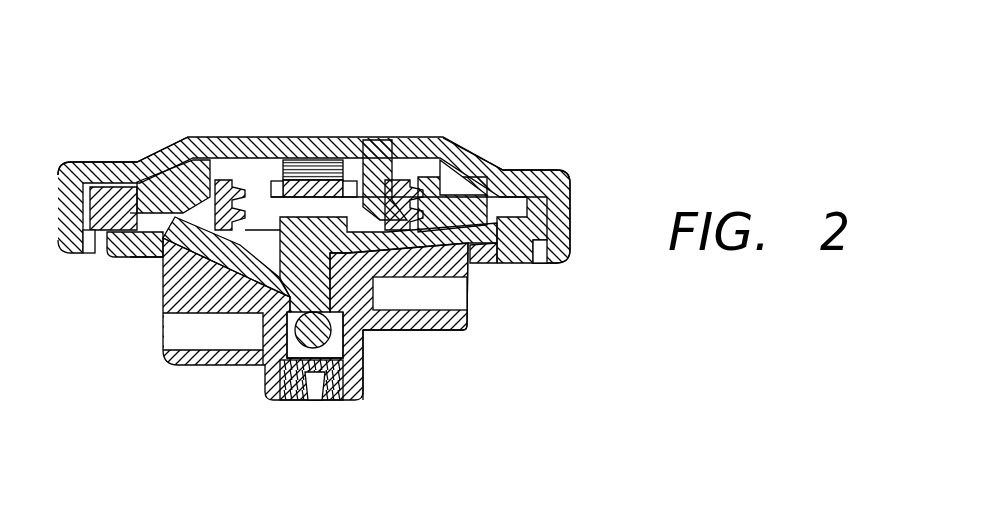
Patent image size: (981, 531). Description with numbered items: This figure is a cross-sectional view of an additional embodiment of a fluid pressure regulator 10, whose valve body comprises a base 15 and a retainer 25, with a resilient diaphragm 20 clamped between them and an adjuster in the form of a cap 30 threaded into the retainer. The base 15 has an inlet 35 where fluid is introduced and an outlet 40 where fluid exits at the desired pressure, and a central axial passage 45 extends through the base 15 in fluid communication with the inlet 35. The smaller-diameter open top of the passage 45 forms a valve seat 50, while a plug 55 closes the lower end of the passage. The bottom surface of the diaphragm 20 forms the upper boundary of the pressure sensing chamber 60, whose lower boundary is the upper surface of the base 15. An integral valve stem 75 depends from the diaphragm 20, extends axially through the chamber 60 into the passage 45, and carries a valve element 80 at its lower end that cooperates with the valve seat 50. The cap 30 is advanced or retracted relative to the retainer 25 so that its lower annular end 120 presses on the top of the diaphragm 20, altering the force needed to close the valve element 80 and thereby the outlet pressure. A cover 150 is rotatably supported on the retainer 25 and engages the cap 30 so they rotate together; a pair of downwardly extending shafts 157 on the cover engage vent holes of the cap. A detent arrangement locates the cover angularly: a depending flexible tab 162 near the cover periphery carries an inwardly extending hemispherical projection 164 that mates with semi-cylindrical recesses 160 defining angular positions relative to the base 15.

The pressure regulator 10 is at (457, 78).
The base 15 is at (467, 330).
The diaphragm 20 is at (135, 272).
The retainer 25 is at (128, 160).
The cap 30 is at (413, 140).
The inlet 35 is at (180, 341).
The outlet 40 is at (467, 323).
The passage 45 is at (367, 357).
The valve seat 50 is at (245, 357).
The plug 55 is at (297, 403).
The pressure sensing chamber 60 is at (177, 283).
The valve stem 75 is at (395, 333).
The valve element 80 is at (333, 400).
The lower annular end 120 is at (363, 190).
The cover 150 is at (266, 160).
The shafts 157 is at (182, 136).
The recesses 160 is at (560, 183).
The flexible tab 162 is at (507, 142).
The projection 164 is at (565, 243).